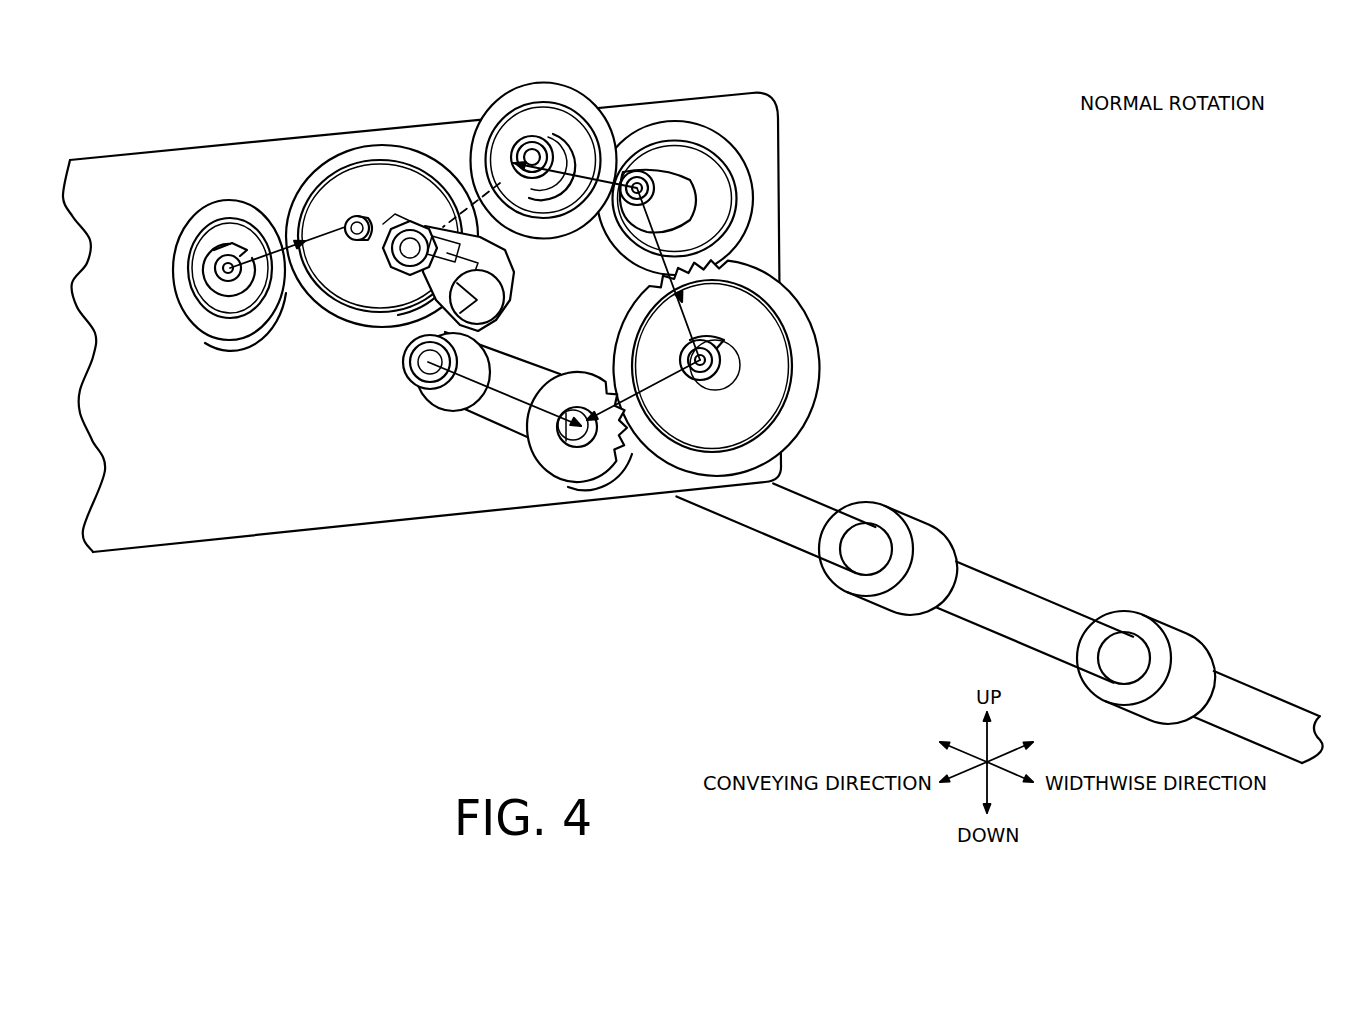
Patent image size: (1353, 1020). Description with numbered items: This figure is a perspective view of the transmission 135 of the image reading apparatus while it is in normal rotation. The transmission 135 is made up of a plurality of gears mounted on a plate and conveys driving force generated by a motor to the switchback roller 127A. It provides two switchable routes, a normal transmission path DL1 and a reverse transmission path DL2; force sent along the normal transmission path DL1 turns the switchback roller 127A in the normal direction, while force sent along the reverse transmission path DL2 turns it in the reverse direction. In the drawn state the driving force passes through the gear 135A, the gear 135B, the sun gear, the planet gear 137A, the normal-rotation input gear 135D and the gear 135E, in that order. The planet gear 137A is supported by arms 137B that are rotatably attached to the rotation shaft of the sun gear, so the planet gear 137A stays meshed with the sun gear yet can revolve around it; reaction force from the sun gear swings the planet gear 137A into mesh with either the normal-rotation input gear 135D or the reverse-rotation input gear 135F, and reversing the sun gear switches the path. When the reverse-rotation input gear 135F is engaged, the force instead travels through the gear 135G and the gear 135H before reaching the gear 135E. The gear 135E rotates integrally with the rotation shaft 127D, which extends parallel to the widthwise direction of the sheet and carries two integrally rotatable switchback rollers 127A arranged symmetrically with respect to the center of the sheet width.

The transmission 135 is at (455, 158).
The gear 135A is at (218, 215).
The gear 135B is at (327, 163).
The normal-rotation input gear 135D is at (497, 417).
The gear 135E is at (607, 478).
The reverse-rotation input gear 135F is at (560, 98).
The gear 135G is at (742, 190).
The gear 135H is at (813, 362).
The planet gear 137A is at (543, 293).
The arms 137B is at (400, 303).
The normal transmission path DL1 is at (493, 420).
The reverse transmission path DL2 is at (785, 256).
The switchback roller 127A is at (920, 532).
The rotation shaft 127D is at (1033, 613).